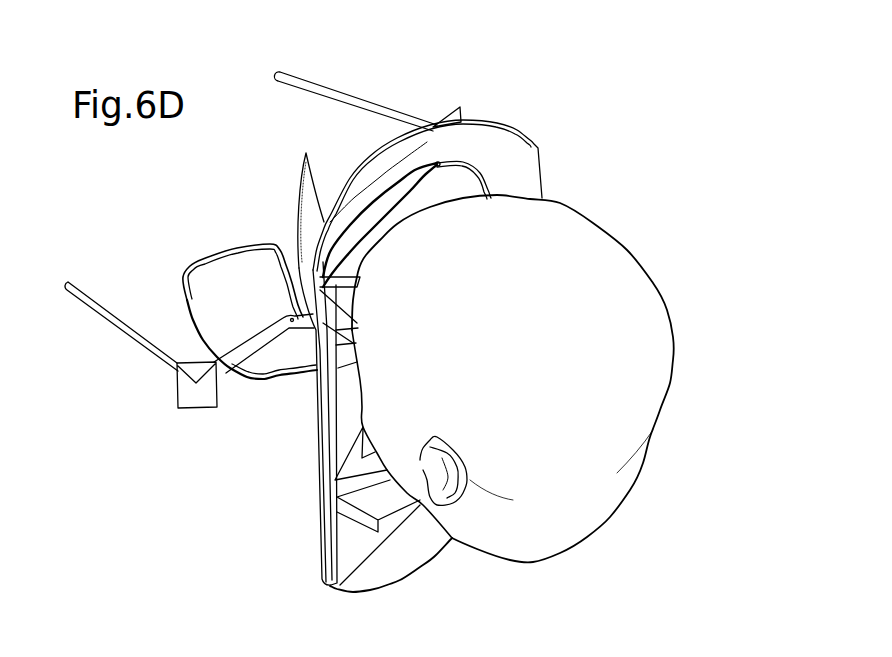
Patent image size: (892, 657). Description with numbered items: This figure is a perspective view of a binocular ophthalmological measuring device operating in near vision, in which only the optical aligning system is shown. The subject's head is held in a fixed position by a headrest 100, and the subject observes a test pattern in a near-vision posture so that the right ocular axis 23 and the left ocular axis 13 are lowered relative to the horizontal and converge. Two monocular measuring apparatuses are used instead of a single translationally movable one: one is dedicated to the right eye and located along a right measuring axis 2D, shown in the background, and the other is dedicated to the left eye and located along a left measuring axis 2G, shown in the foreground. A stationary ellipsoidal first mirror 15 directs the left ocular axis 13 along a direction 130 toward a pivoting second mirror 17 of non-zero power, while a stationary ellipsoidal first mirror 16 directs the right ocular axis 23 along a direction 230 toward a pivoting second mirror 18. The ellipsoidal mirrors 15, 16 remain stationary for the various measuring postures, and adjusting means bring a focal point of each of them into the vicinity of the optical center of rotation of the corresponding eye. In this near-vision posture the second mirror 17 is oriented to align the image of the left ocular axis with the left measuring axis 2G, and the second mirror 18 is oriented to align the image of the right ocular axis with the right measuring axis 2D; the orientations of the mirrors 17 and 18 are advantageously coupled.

The headrest 100 is at (508, 147).
The right measuring axis 2D is at (300, 80).
The second mirror 18 is at (442, 124).
The direction 230 is at (394, 192).
The stationary ellipsoidal first mirror 16 is at (297, 193).
The stationary ellipsoidal first mirror 15 is at (223, 273).
The left measuring axis 2G is at (120, 317).
The second mirror 17 is at (183, 390).
The direction 130 is at (220, 370).
The right ocular axis 23 is at (380, 248).
The left ocular axis 13 is at (348, 364).